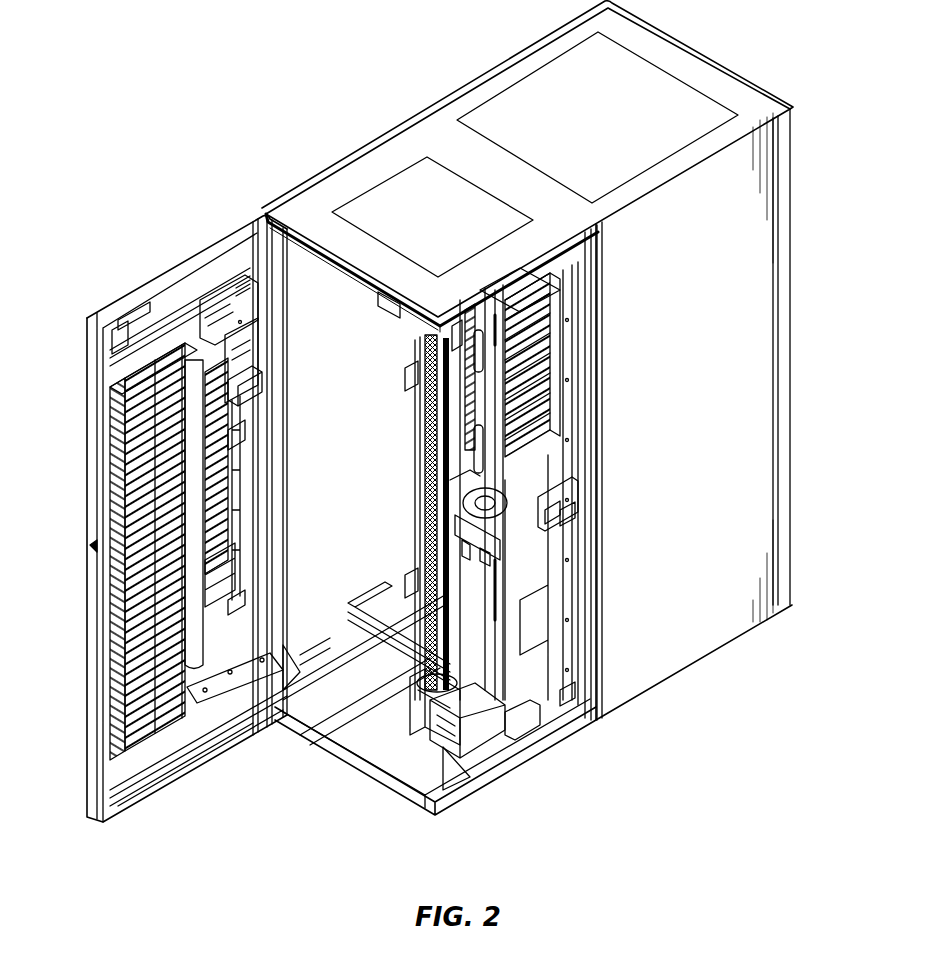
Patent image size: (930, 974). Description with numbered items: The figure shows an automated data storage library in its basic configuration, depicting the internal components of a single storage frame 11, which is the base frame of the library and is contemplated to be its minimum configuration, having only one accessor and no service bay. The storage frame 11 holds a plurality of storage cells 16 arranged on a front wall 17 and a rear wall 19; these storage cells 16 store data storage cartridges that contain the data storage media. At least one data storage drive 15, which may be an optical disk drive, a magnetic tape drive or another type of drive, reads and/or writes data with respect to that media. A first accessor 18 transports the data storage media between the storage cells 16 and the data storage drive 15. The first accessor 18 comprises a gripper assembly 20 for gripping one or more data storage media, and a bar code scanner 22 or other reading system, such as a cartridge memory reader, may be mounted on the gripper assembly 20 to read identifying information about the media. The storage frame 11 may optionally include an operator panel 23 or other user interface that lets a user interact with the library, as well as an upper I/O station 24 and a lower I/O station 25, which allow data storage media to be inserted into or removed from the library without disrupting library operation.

The storage frame 11 is at (354, 811).
The data storage drive 15 is at (560, 317).
The storage cells 16 is at (108, 640).
The front wall 17 is at (97, 483).
The first accessor 18 is at (467, 708).
The rear wall 19 is at (415, 353).
The gripper assembly 20 is at (548, 518).
The bar code scanner 22 is at (443, 553).
The operator panel 23 is at (243, 323).
The upper I/O station 24 is at (228, 372).
The lower I/O station 25 is at (228, 575).